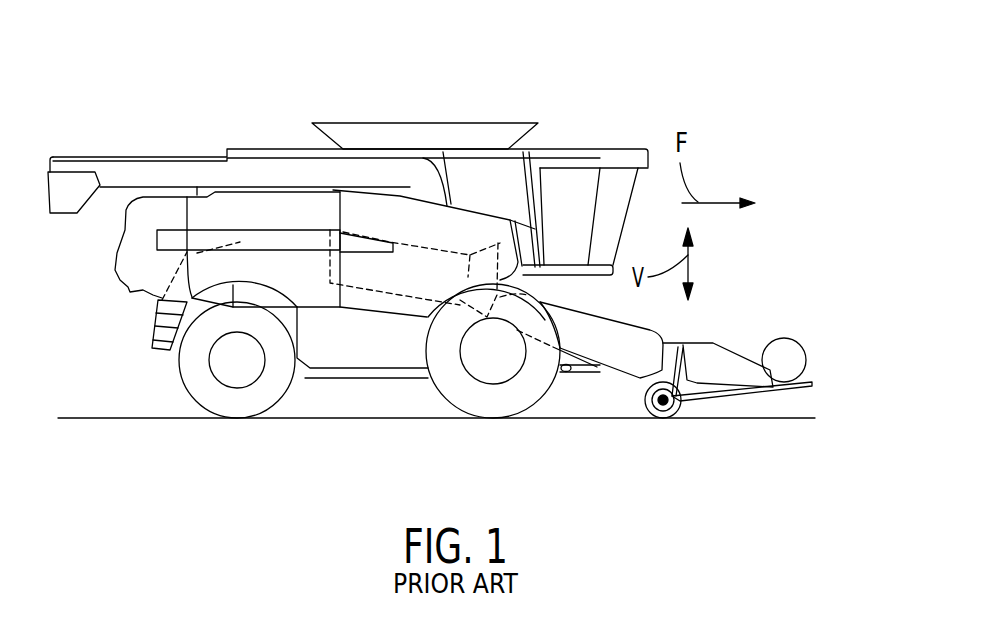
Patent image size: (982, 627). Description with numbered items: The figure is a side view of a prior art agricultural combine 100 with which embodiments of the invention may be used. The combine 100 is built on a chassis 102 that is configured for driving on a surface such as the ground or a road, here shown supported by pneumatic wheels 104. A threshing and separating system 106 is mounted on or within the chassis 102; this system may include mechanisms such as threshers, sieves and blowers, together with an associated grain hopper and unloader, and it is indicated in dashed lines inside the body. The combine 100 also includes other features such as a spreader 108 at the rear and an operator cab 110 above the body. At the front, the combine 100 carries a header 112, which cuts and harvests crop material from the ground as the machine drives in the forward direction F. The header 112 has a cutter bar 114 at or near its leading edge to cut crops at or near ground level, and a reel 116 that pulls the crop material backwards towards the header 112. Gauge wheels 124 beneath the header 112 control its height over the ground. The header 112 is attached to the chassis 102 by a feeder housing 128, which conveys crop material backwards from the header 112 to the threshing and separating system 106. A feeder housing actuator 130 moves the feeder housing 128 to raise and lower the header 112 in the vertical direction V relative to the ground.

The agricultural combine 100 is at (724, 95).
The chassis 102 is at (318, 347).
The pneumatic wheels 104 is at (473, 405).
The threshing and separating system 106 is at (400, 295).
The spreader 108 is at (155, 333).
The operator cab 110 is at (567, 183).
The header 112 is at (723, 370).
The cutter bar 114 is at (778, 386).
The reel 116 is at (785, 350).
The gauge wheels 124 is at (658, 410).
The feeder housing 128 is at (620, 360).
The feeder housing actuator 130 is at (557, 373).